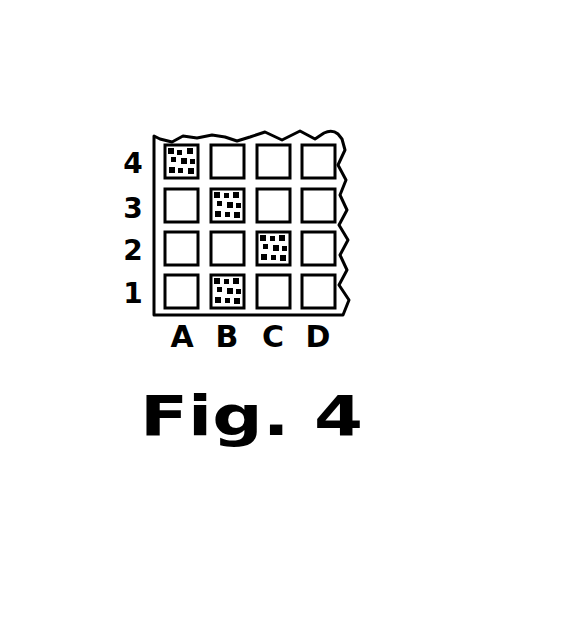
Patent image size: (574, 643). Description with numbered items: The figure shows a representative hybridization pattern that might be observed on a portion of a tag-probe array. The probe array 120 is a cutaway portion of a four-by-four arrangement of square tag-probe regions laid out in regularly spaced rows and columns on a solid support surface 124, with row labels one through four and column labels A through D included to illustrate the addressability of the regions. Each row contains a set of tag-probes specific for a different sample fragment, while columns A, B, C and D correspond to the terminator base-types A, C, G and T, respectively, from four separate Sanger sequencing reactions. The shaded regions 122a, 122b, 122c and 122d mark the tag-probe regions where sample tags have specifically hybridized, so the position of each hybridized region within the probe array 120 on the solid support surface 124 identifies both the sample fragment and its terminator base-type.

The probe array 120 is at (348, 132).
The tag-probe region 122a is at (175, 147).
The tag-probe region 122b is at (227, 190).
The tag-probe region 122c is at (288, 236).
The tag-probe region 122d is at (218, 288).
The solid support surface 124 is at (340, 257).